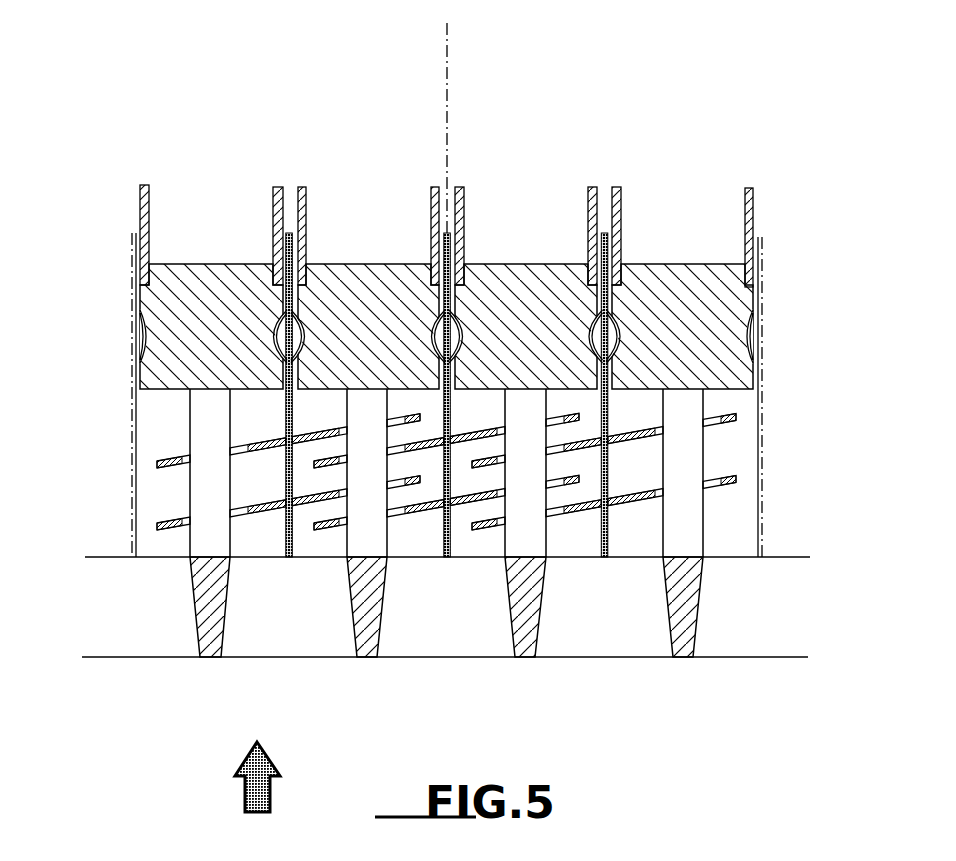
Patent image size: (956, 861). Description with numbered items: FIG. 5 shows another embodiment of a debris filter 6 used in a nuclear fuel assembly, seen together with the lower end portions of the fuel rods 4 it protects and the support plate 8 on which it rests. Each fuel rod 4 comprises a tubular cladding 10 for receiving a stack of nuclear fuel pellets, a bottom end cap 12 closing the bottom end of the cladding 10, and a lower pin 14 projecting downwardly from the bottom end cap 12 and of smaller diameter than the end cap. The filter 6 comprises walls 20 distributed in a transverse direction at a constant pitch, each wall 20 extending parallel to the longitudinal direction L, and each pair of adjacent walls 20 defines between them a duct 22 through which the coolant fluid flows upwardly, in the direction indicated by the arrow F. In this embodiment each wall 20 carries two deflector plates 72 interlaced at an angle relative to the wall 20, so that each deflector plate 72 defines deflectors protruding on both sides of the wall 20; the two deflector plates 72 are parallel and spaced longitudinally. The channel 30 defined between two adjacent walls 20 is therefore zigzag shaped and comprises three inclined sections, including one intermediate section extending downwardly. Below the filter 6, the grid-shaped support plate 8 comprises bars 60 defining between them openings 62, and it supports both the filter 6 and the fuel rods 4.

The fuel rod 4 is at (404, 188).
The tubular cladding 10 is at (145, 217).
The debris filter 6 is at (780, 278).
The bottom end cap 12 is at (182, 343).
The wall 20 is at (295, 236).
The duct 22 is at (158, 400).
The lower pin 14 is at (197, 421).
The deflector plate 72 is at (165, 518).
The channel 30 is at (287, 523).
The bar 60 is at (212, 640).
The opening 62 is at (128, 632).
The support plate 8 is at (760, 668).
The longitudinal direction L is at (438, 127).
The flow direction F is at (268, 795).